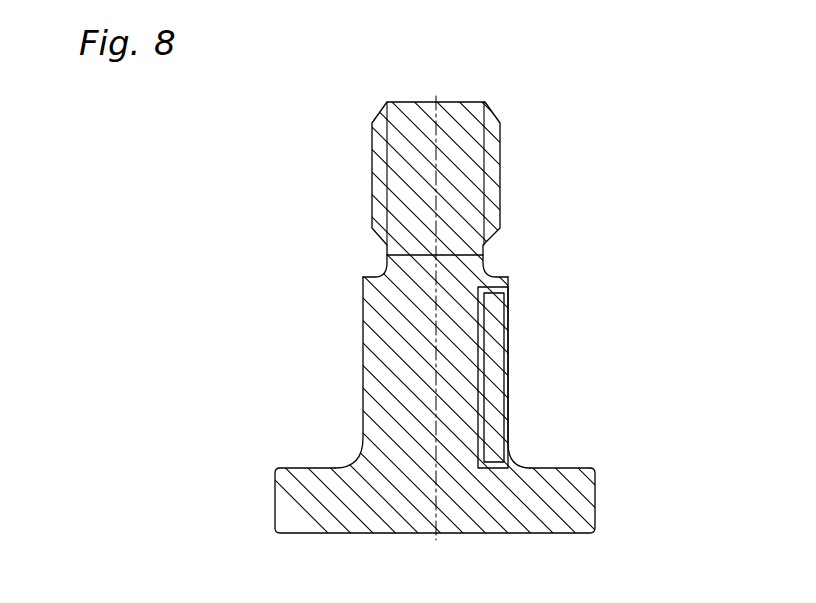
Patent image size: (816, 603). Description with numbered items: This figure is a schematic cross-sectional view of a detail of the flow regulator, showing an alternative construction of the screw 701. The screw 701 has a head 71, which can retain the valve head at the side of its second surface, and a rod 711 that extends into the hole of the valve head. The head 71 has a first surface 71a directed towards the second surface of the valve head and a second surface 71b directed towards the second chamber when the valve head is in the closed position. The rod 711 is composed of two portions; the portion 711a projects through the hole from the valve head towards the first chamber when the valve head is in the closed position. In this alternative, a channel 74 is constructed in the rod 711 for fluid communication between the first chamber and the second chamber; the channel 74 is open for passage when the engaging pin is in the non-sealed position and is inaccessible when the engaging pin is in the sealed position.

The portion of the rod 711a is at (500, 170).
The rod 711 is at (340, 278).
The channel 74 is at (505, 285).
The screw 701 is at (556, 339).
The second surface 71b is at (382, 361).
The first surface 71a is at (574, 467).
The head 71 is at (584, 508).